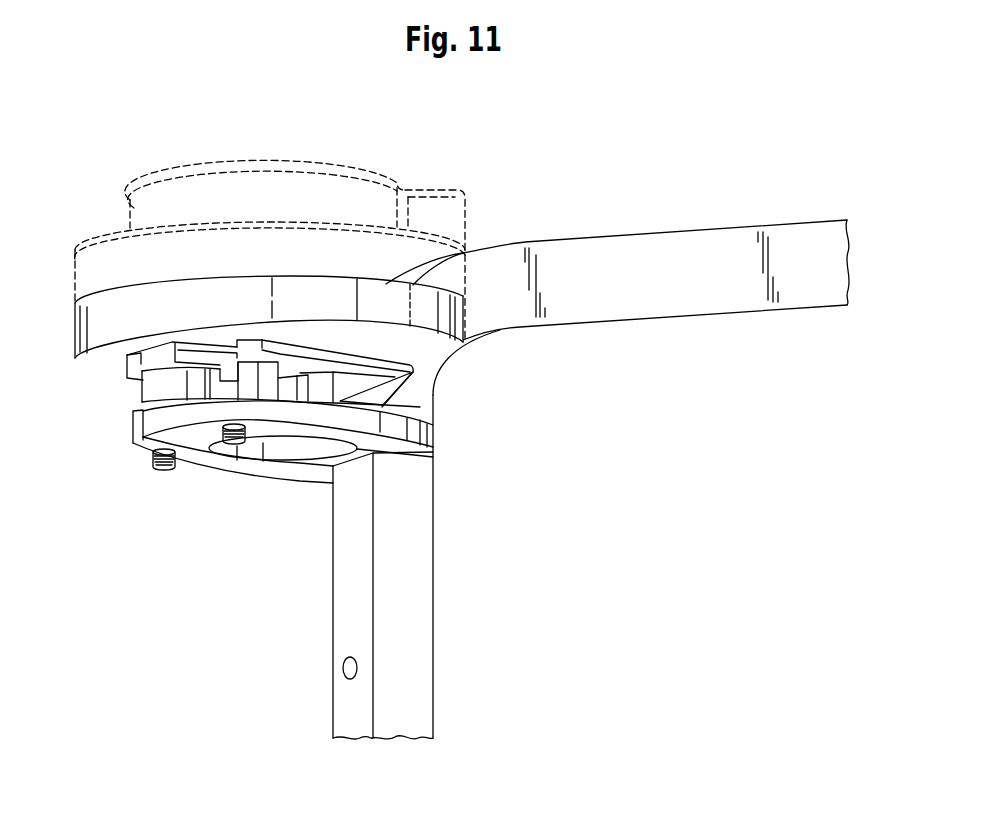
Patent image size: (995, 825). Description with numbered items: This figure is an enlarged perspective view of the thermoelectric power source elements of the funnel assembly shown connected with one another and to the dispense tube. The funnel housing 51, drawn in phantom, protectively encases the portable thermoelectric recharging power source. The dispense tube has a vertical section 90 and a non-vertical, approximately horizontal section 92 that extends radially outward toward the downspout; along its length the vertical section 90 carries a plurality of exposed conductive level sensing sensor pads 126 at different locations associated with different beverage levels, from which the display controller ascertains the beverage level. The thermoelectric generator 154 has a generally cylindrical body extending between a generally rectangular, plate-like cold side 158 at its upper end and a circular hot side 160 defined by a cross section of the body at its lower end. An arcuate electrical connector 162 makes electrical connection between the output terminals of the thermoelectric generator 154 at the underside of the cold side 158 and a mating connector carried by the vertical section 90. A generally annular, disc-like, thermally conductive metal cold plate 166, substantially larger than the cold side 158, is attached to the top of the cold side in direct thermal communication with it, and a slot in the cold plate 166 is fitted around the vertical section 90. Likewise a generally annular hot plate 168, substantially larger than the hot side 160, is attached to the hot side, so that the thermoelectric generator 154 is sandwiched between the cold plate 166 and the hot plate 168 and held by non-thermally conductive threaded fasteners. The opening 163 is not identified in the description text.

The funnel housing 51 is at (175, 178).
The cold plate 166 is at (290, 292).
The non-vertical section 92 is at (672, 233).
The cold side 158 is at (126, 359).
The arcuate electrical connector 162 is at (416, 374).
The thermoelectric generator 154 is at (167, 390).
The hot side 160 is at (140, 412).
The opening 163 is at (265, 383).
The hot plate 168 is at (233, 468).
The vertical section 90 is at (413, 544).
The level sensing sensor pads 126 is at (343, 668).